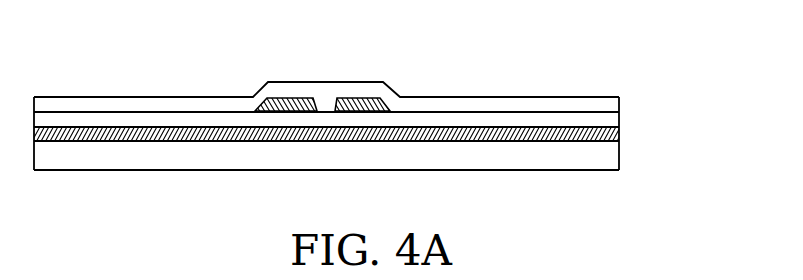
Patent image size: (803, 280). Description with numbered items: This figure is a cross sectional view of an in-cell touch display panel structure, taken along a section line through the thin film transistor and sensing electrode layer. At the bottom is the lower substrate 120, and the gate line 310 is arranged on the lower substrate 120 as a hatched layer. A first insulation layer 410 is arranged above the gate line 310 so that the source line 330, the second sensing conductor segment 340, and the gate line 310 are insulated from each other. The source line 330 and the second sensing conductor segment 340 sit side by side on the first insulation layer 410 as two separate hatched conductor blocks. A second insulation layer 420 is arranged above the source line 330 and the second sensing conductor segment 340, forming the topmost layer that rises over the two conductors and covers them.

The second insulation layer 420 is at (619, 102).
The first insulation layer 410 is at (619, 119).
The gate line 310 is at (619, 135).
The lower substrate 120 is at (619, 163).
The second sensing conductor segment 340 is at (277, 99).
The source line 330 is at (387, 100).